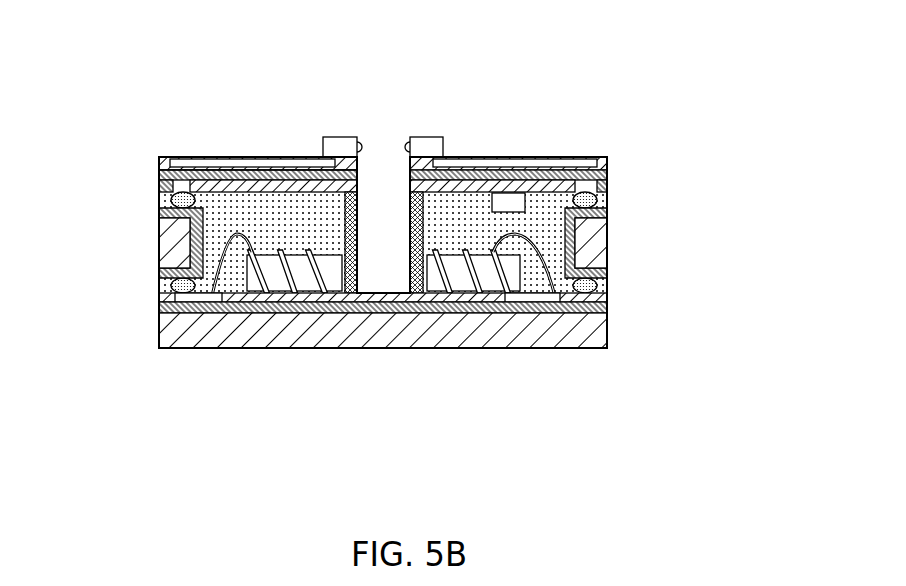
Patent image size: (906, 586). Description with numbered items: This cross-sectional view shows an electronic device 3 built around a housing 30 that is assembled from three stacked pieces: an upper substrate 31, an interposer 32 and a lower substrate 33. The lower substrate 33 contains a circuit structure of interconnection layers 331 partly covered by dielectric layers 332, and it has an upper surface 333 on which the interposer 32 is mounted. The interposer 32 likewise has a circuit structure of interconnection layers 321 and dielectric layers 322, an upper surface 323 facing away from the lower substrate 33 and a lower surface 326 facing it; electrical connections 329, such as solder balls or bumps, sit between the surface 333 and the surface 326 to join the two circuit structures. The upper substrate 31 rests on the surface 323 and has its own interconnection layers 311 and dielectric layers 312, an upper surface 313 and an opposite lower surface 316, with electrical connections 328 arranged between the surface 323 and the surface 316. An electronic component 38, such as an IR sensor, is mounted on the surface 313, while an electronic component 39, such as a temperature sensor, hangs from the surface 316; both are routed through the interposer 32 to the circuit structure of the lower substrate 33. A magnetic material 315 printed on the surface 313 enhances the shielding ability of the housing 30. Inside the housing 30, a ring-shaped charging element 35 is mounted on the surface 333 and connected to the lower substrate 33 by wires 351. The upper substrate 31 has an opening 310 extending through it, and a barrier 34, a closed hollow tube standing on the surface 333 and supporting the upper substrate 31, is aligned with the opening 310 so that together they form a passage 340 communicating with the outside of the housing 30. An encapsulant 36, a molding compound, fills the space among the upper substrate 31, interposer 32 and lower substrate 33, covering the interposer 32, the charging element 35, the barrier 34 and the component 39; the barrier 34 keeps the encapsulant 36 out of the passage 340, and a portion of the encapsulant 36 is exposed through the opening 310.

The electronic device 3 is at (690, 72).
The housing 30 is at (738, 160).
The substrate 31 is at (607, 165).
The interconnection layers 311 is at (468, 165).
The dielectric layers 312 is at (548, 187).
The surface 313 is at (163, 157).
The magnetic material 315 is at (205, 157).
The surface 316 is at (158, 200).
The interposer 32 is at (607, 242).
The interconnection layers 321 is at (158, 265).
The dielectric layers 322 is at (158, 228).
The surface 323 is at (607, 206).
The surface 326 is at (158, 283).
The electrical connections 328 is at (605, 199).
The electrical connections 329 is at (158, 302).
The substrate 33 is at (605, 323).
The interconnection layers 331 is at (165, 308).
The dielectric layers 332 is at (167, 328).
The surface 333 is at (607, 284).
The barrier 34 is at (413, 282).
The passage 340 is at (380, 273).
The charging element 35 is at (490, 277).
The wires 351 is at (541, 278).
The encapsulant 36 is at (253, 200).
The electronic component 38 is at (333, 140).
The electronic component 39 is at (508, 200).
The opening 310 is at (378, 175).